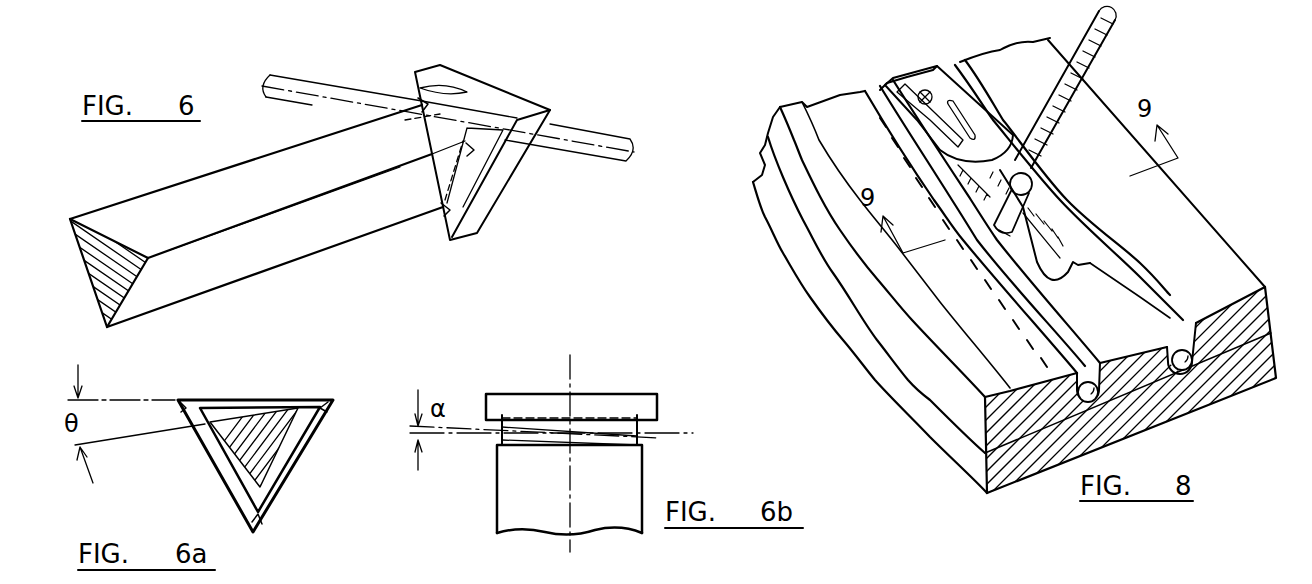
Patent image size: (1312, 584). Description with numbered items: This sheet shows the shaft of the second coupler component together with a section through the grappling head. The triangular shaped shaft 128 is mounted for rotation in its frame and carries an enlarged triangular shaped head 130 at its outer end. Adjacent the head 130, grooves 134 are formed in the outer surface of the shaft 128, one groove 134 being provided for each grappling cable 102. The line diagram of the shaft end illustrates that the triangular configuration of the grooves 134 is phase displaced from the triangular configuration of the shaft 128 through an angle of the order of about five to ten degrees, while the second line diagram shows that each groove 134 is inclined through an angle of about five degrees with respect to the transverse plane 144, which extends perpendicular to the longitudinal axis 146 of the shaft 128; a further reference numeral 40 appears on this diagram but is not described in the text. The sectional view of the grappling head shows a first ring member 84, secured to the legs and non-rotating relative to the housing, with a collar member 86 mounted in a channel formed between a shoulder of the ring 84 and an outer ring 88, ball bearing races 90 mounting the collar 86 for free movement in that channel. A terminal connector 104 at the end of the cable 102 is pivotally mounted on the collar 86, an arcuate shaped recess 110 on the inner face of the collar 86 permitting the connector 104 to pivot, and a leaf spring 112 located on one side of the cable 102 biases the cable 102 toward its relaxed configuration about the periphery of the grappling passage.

In FIG. 6, the grappling cable 102 is at (297, 84).
In FIG. 8, the grappling cable 102 is at (1105, 50).
In FIG. 8, the terminal connector 104 is at (1012, 200).
In FIG. 8, the arcuate shaped recess 110 is at (1060, 258).
In FIG. 8, the leaf spring 112 is at (973, 153).
In FIG. 6, the triangular shaped shaft 128 is at (305, 237).
In FIG. 6A, the triangular shaped shaft 128 is at (270, 440).
In FIG. 6B, the triangular shaped shaft 128 is at (512, 502).
In FIG. 6, the triangular shaped head 130 is at (488, 92).
In FIG. 6A, the triangular shaped head 130 is at (285, 400).
In FIG. 6B, the triangular shaped head 130 is at (535, 403).
In FIG. 6, the groove 134 is at (422, 102).
In FIG. 6A, the groove 134 is at (290, 404).
In FIG. 6B, the groove 134 is at (640, 437).
In FIG. 6B, the transverse plane 144 is at (675, 430).
In FIG. 6B, the longitudinal axis 146 is at (572, 375).
In FIG. 6B, the axis 40 is at (620, 573).
In FIG. 8, the first ring member 84 is at (1180, 228).
In FIG. 8, the collar member 86 is at (1167, 287).
In FIG. 8, the outer ring 88 is at (880, 275).
In FIG. 8, the ball bearing race 90 is at (1095, 404).